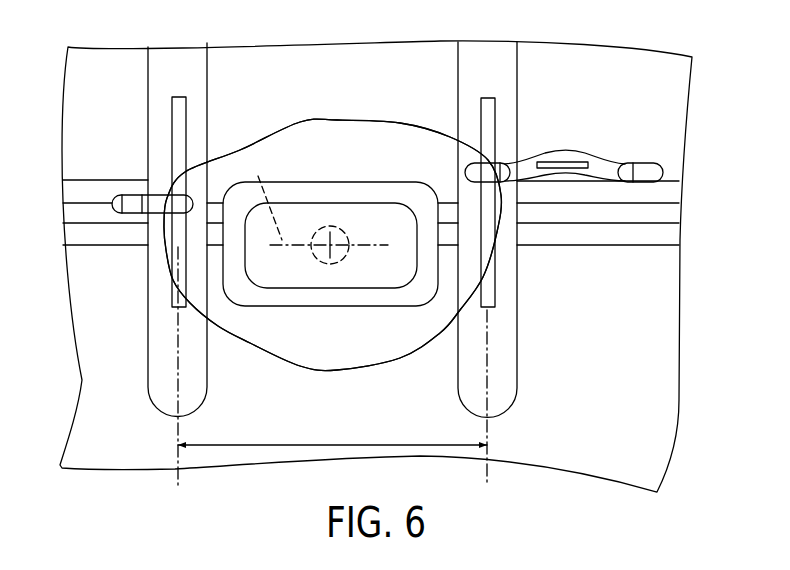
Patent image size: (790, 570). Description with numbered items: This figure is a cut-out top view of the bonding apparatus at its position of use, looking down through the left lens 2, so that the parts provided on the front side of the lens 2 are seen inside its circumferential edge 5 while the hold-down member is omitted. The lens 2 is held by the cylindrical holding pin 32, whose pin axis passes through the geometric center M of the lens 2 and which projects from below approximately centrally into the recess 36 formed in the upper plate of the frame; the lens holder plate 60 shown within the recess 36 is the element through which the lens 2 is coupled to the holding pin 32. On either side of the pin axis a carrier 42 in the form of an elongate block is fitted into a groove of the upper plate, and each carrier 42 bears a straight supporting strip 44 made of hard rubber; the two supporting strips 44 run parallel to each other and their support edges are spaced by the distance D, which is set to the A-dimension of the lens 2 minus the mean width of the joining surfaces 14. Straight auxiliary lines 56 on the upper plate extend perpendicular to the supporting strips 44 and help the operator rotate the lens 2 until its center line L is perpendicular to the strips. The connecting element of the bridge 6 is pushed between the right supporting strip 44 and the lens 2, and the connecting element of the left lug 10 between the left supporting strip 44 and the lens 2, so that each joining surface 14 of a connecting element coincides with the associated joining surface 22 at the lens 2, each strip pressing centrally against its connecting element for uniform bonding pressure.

The left lens 2 is at (337, 116).
The circumferential edge 5 is at (299, 377).
The bridge 6 is at (565, 148).
The left lug 10 is at (140, 222).
The joining surface 14 is at (645, 171).
The joining surface 22 is at (538, 130).
The holding pin 32 is at (334, 262).
The recess 36 is at (375, 297).
The carrier 42 is at (197, 382).
The supporting strip 44 is at (180, 114).
The auxiliary line 56 is at (633, 225).
The inner mounting plate 60 is at (280, 277).
The center line L is at (267, 193).
The geometric center M is at (333, 243).
The distance D is at (335, 447).